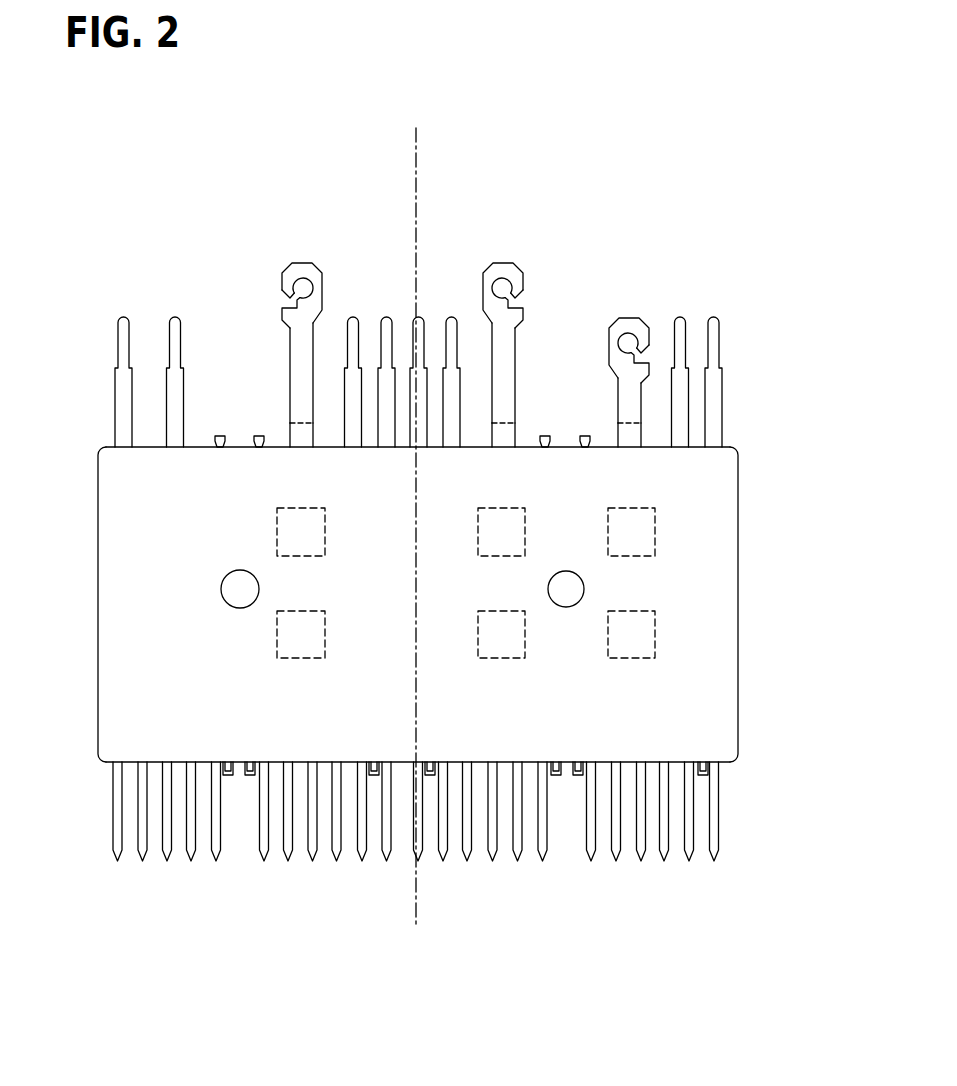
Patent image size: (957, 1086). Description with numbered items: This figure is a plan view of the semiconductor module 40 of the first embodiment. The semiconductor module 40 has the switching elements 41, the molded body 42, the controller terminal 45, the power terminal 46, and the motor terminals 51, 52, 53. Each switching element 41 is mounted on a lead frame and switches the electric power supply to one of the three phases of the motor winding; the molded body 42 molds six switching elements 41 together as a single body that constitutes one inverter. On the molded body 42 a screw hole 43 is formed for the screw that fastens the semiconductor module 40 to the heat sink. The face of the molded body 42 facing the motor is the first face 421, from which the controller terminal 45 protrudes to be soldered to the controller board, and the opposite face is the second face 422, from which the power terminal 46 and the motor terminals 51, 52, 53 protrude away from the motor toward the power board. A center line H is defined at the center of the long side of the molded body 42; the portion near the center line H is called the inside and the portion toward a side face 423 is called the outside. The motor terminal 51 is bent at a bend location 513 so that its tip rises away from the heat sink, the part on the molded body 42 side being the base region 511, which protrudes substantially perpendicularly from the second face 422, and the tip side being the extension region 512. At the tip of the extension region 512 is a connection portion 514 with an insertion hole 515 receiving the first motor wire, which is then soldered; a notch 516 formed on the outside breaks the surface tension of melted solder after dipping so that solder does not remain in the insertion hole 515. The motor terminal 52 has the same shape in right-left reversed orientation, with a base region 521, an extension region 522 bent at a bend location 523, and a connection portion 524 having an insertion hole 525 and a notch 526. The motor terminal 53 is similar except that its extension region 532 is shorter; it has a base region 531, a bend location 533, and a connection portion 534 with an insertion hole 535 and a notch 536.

The semiconductor module 40 is at (149, 898).
The switching element 41 is at (233, 645).
The molded body 42 is at (426, 589).
The screw hole 43 is at (233, 609).
The controller terminal 45 is at (687, 862).
The power terminal 46 is at (121, 316).
The motor terminal 51 is at (306, 248).
The motor terminal 52 is at (507, 248).
The motor terminal 53 is at (632, 305).
The first face 421 is at (572, 763).
The second face 422 is at (146, 445).
The side face 423 is at (98, 495).
The base region 511 is at (298, 437).
The extension region 512 is at (300, 350).
The bend location 513 is at (303, 421).
The connection portion 514 is at (318, 272).
The insertion hole 515 is at (308, 293).
The notch 516 is at (290, 299).
The base region 521 is at (508, 437).
The extension region 522 is at (508, 357).
The bend location 523 is at (508, 421).
The connection portion 524 is at (490, 272).
The insertion hole 525 is at (498, 293).
The notch 526 is at (523, 297).
The base region 531 is at (630, 435).
The extension region 532 is at (632, 402).
The bend location 533 is at (630, 422).
The connection portion 534 is at (612, 325).
The insertion hole 535 is at (633, 338).
The notch 536 is at (642, 353).
The center line H is at (416, 138).